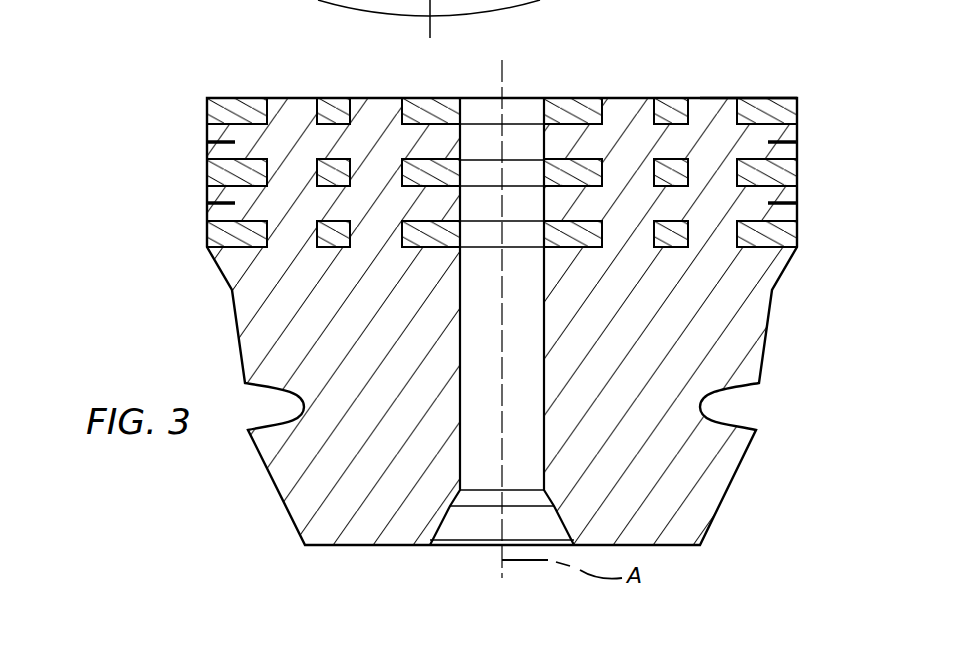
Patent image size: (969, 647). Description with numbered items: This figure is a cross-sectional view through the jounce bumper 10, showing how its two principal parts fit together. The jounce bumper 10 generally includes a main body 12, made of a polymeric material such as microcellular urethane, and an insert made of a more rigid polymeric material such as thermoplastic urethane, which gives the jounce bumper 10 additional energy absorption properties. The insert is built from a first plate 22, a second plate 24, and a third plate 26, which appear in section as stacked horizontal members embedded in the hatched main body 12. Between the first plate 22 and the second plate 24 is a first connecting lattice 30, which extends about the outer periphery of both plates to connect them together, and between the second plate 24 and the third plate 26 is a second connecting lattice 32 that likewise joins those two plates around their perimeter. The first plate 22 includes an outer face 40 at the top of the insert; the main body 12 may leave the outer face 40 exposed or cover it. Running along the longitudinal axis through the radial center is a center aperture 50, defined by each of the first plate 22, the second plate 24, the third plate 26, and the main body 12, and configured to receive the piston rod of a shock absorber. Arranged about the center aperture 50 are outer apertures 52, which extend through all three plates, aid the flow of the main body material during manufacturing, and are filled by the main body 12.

The jounce bumper 10 is at (180, 76).
The main body 12 is at (628, 103).
The first plate 22 is at (785, 110).
The second plate 24 is at (787, 168).
The third plate 26 is at (787, 233).
The first connecting lattice 30 is at (207, 142).
The second connecting lattice 32 is at (207, 203).
The outer face 40 is at (765, 96).
The center aperture 50 is at (540, 106).
The outer apertures 52 is at (352, 108).